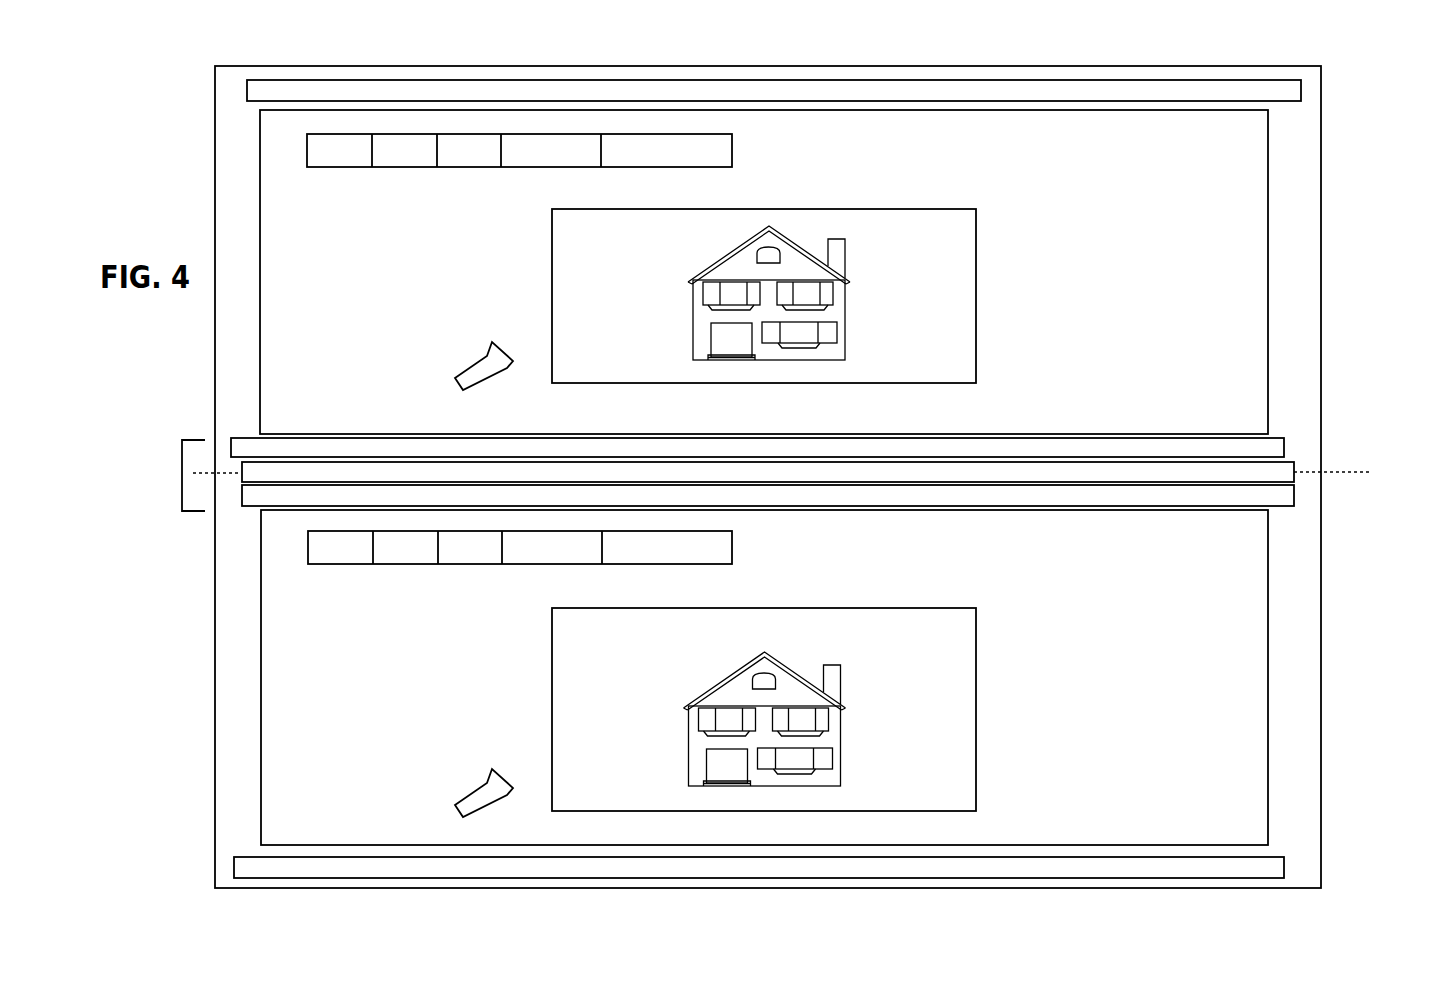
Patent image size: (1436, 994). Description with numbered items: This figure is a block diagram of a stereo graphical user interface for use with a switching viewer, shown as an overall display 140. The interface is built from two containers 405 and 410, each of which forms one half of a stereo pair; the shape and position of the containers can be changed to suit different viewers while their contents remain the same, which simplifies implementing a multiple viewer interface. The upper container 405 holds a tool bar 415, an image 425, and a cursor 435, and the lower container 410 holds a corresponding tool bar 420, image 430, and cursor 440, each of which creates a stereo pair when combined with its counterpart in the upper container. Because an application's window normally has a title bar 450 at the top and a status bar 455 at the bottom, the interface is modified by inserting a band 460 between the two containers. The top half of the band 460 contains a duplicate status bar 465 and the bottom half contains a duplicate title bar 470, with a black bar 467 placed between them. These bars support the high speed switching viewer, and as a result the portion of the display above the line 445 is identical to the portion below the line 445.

The display screen 140 is at (962, 60).
The title bar 450 is at (236, 88).
The container 405 is at (1282, 246).
The tool bar 415 is at (748, 148).
The image 425 is at (986, 249).
The cursor 435 is at (438, 383).
The duplicate status bar 465 is at (227, 433).
The black bar 467 is at (1300, 452).
The line 445 is at (1372, 462).
The band 460 is at (170, 477).
The duplicate title bar 470 is at (227, 513).
The container 410 is at (1282, 683).
The tool bar 420 is at (748, 538).
The image 430 is at (986, 673).
The cursor 440 is at (438, 810).
The status bar 455 is at (226, 860).